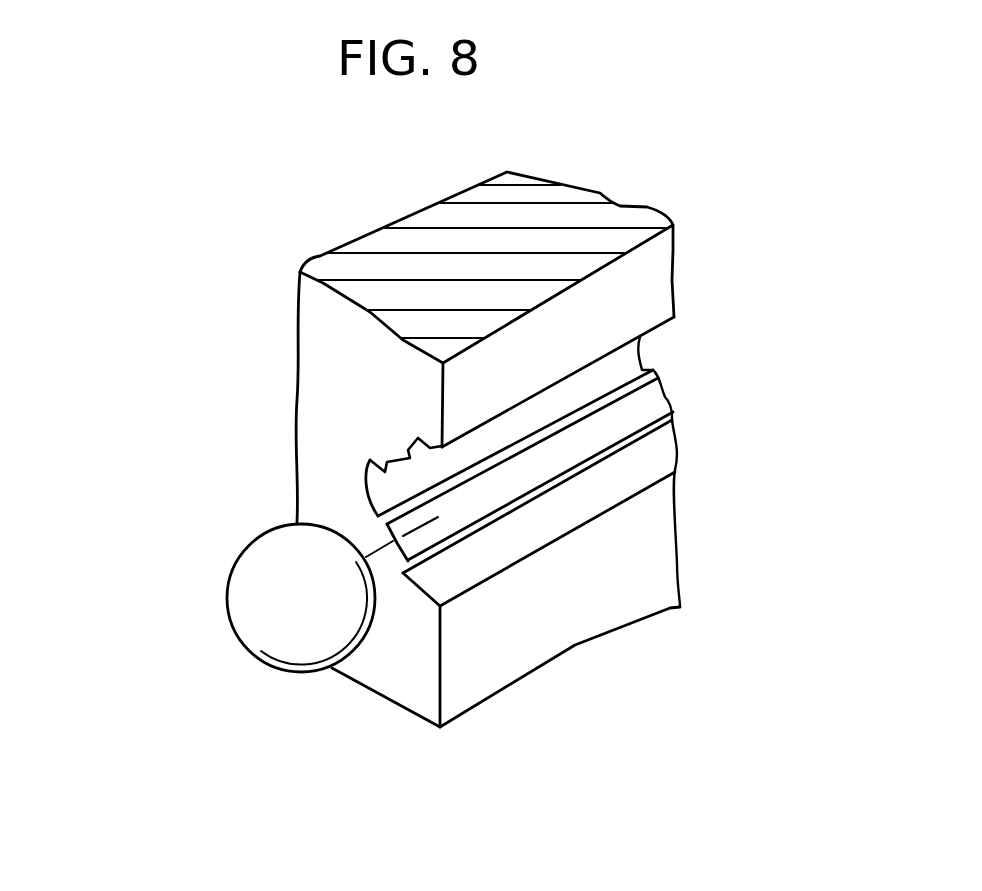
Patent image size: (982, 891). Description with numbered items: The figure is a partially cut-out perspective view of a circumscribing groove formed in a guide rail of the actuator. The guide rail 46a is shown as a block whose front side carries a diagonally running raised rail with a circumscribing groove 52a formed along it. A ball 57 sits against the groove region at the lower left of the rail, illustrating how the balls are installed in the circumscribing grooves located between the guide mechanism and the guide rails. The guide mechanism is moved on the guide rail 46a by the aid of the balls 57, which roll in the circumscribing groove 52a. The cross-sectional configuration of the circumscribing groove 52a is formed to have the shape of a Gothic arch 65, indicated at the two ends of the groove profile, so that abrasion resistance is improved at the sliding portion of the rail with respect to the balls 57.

The guide rail 46a is at (185, 248).
The circumscribing groove 52a is at (863, 775).
The ball 57 is at (278, 627).
The Gothic arch 65 is at (397, 462).